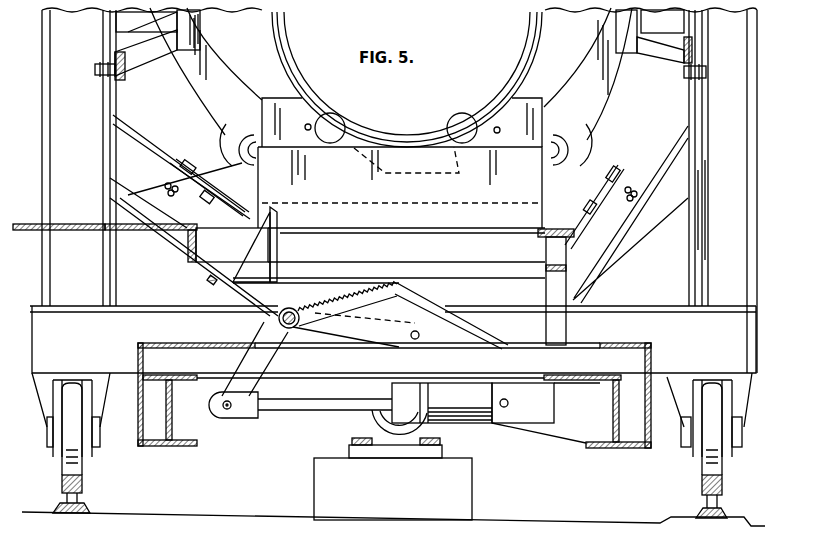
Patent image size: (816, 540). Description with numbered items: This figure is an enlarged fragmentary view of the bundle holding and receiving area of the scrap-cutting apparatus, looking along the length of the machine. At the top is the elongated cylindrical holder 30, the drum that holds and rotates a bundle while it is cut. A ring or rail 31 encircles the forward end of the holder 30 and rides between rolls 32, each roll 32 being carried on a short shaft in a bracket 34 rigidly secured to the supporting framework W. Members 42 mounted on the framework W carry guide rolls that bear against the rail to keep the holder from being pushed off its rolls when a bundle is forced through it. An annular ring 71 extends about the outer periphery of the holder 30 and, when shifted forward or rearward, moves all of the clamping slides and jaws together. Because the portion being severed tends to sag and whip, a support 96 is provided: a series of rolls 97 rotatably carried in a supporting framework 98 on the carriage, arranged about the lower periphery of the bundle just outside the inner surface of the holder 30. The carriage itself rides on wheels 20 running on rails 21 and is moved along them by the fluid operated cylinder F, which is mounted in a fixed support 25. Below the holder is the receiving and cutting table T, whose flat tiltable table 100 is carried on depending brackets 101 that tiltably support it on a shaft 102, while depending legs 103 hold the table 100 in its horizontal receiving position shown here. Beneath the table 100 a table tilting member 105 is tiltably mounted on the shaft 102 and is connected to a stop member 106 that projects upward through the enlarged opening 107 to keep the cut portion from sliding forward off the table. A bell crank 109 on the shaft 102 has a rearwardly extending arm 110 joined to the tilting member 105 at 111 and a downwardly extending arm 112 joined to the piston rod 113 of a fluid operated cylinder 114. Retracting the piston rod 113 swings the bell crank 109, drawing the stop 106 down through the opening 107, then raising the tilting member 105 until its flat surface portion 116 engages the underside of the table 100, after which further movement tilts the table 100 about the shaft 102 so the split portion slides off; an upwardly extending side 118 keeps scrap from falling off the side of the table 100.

The wheels 20 is at (83, 470).
The rails 21 is at (83, 492).
The fixed support 25 is at (472, 460).
The holder 30 is at (520, 57).
The ring or rail 31 is at (275, 55).
The rolls 32 is at (212, 110).
The bracket 34 is at (614, 157).
The member 42 is at (160, 70).
The annular ring 71 is at (604, 113).
The support 96 is at (258, 120).
The rolls 97 is at (349, 133).
The supporting framework 98 is at (586, 145).
The tiltable table 100 is at (148, 230).
The depending brackets 101 is at (360, 266).
The shaft 102 is at (299, 328).
The depending legs 103 is at (568, 330).
The table tilting member 105 is at (433, 296).
The stop member 106 is at (279, 249).
The enlarged opening 107 is at (232, 244).
The bell crank 109 is at (244, 366).
The rearwardly extending arm 110 is at (375, 346).
The connection 111 is at (420, 336).
The downwardly extending arm 112 is at (212, 388).
The piston rod 113 is at (292, 402).
The fluid operated cylinder 114 is at (467, 423).
The flat surface portion 116 is at (487, 332).
The upwardly extending side 118 is at (400, 163).
The fluid operated cylinder F is at (363, 420).
The receiving and cutting table T is at (98, 234).
The supporting framework W is at (757, 173).